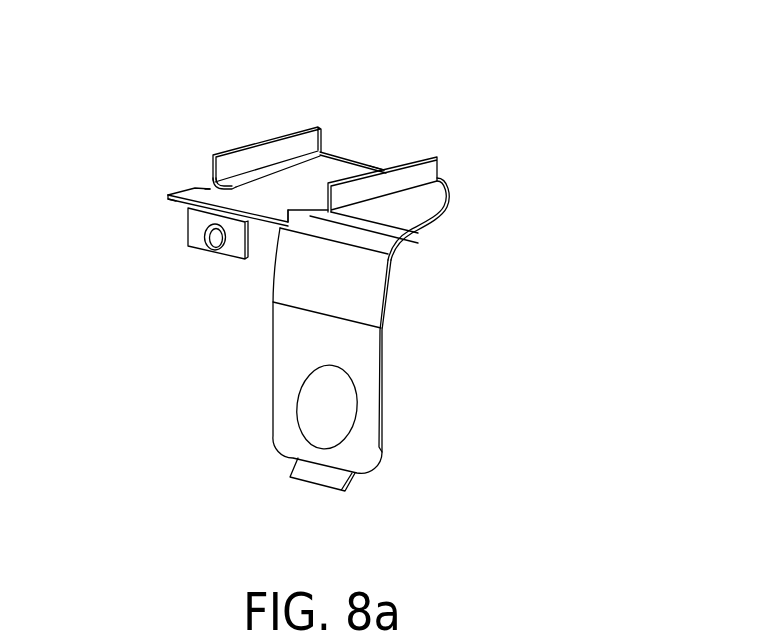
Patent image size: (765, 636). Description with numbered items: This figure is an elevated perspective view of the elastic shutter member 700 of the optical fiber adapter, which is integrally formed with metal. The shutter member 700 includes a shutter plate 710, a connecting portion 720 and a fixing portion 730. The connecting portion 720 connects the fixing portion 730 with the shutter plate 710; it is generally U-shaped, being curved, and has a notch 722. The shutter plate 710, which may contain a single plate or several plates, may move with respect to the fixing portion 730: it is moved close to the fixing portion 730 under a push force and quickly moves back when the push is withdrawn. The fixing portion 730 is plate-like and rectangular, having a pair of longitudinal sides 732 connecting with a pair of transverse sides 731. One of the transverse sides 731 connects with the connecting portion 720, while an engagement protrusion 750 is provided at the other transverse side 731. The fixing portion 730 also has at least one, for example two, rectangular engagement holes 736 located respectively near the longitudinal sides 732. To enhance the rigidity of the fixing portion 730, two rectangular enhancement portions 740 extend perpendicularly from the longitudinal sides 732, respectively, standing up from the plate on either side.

The shutter member 700 is at (435, 82).
The shutter plate 710 is at (362, 385).
The connecting portion 720 is at (448, 203).
The notch 722 is at (432, 208).
The fixing portion 730 is at (332, 171).
The transverse sides 731 is at (373, 168).
The longitudinal sides 732 is at (240, 172).
The rectangular engagement holes 736 is at (212, 185).
The rectangular enhancement portions 740 is at (257, 162).
The engagement protrusion 750 is at (197, 238).